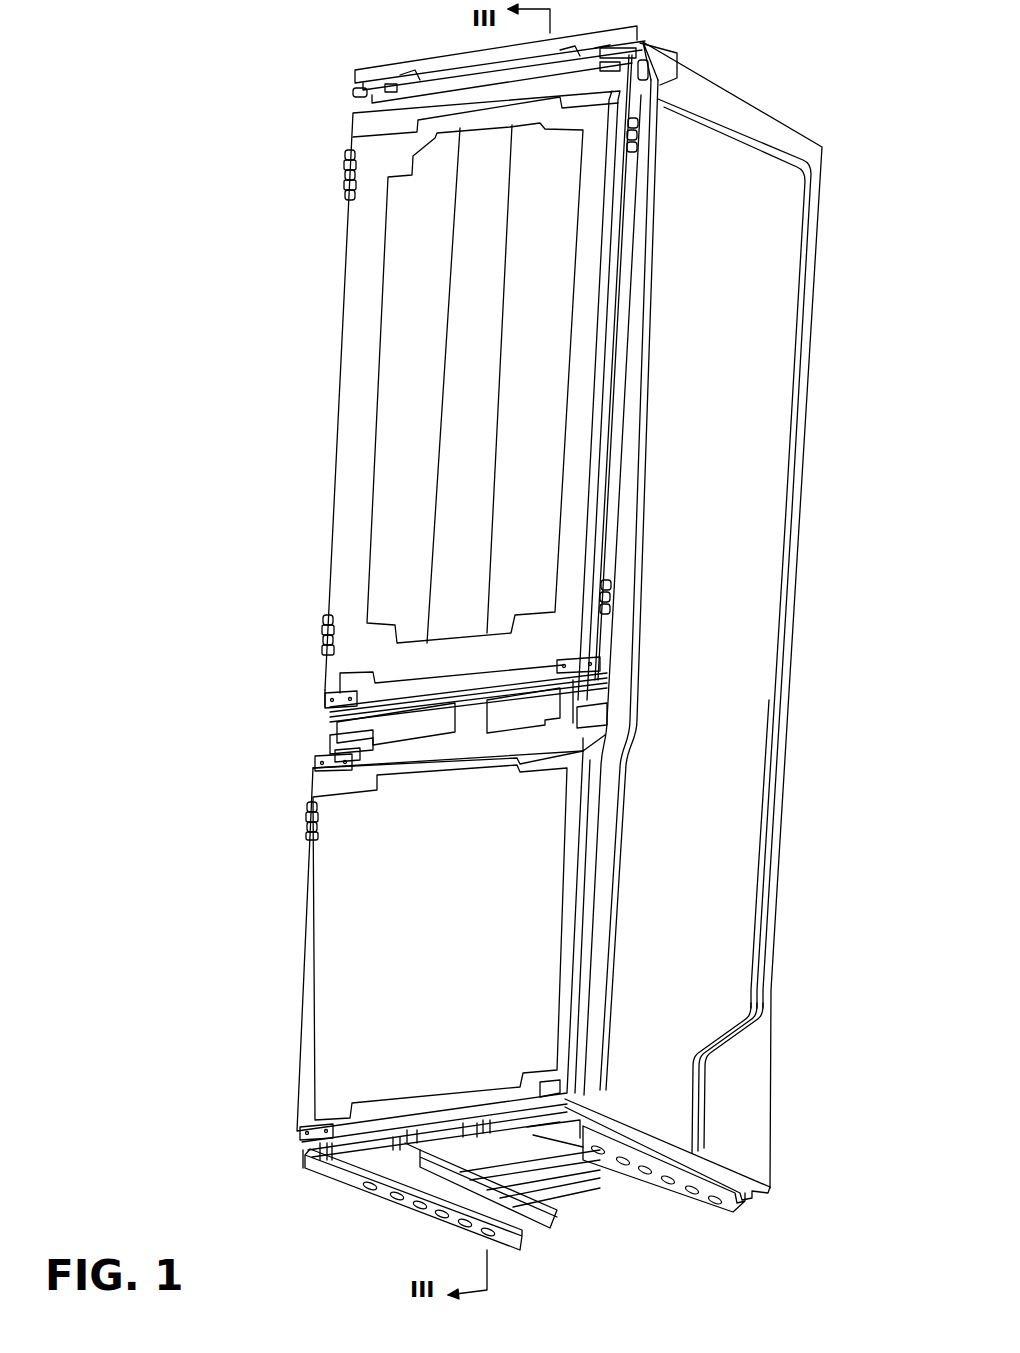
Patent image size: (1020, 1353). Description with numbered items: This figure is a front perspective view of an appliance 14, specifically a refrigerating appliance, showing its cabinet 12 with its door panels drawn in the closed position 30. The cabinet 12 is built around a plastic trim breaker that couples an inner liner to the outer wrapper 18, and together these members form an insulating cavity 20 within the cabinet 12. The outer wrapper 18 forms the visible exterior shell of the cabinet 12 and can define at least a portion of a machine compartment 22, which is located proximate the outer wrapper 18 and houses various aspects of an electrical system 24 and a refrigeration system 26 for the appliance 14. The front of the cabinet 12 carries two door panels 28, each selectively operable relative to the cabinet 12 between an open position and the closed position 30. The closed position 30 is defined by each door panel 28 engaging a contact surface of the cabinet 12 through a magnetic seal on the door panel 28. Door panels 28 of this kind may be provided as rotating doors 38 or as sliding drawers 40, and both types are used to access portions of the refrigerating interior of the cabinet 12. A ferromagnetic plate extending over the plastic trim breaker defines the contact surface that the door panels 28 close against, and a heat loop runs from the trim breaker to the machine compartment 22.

The cabinet 12 is at (758, 102).
The appliance 14 is at (293, 128).
The outer wrapper 18 is at (755, 253).
The insulating cavity 20 is at (738, 392).
The machine compartment 22 is at (763, 1130).
The electrical system 24 is at (750, 1048).
The refrigeration system 26 is at (719, 1143).
The door panel 28 is at (338, 342).
The closed position 30 is at (307, 892).
The rotating door 38 is at (357, 445).
The sliding drawer 40 is at (357, 948).